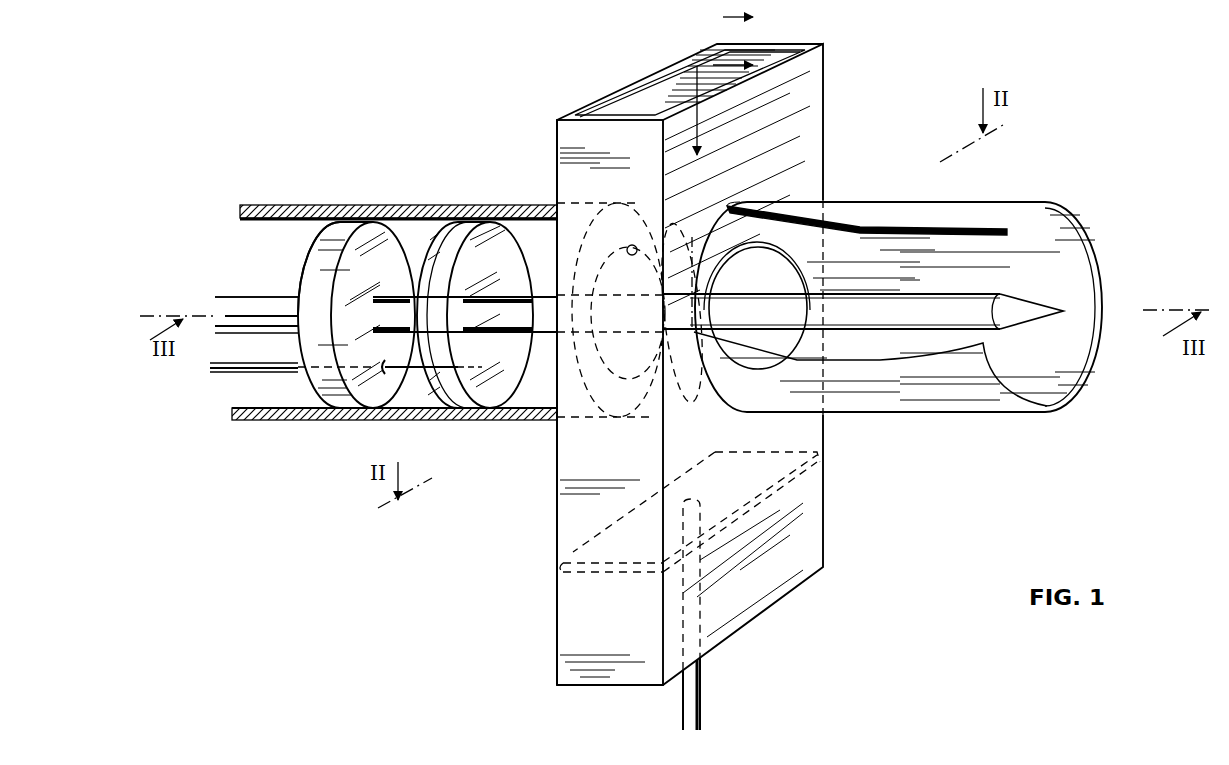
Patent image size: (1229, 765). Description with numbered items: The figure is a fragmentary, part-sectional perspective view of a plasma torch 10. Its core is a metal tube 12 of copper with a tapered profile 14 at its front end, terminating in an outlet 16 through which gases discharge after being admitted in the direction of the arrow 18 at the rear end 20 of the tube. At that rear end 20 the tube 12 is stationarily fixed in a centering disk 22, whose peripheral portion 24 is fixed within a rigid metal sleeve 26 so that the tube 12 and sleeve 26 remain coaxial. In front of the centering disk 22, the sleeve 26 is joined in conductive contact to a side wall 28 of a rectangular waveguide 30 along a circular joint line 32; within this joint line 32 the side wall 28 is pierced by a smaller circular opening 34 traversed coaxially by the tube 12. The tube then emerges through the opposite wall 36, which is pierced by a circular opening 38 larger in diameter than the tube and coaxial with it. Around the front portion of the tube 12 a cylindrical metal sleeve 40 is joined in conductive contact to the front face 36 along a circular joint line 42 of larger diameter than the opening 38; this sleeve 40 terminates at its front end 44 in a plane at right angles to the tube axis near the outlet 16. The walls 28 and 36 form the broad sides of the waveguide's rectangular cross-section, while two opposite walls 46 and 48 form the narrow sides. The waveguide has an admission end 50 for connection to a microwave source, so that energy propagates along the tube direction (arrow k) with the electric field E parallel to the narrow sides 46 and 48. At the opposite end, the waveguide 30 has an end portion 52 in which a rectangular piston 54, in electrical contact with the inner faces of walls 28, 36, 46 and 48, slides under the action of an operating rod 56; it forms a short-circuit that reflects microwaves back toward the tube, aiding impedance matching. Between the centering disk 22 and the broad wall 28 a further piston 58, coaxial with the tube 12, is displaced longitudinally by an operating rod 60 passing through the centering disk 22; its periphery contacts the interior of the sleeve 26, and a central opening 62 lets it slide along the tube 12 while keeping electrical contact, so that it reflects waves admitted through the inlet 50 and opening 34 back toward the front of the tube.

The plasma torch 10 is at (464, 600).
The metal tube 12 is at (872, 318).
The tapered profile 14 is at (1032, 305).
The outlet 16 is at (1064, 312).
The arrow 18 is at (208, 298).
The rear end 20 is at (256, 295).
The centering disk 22 is at (323, 257).
The peripheral portion 24 is at (348, 215).
The rigid metal sleeve 26 is at (287, 420).
The side wall 28 is at (557, 487).
The rectangular waveguide 30 is at (829, 542).
The circular joint line 32 is at (555, 189).
The circular opening 34 is at (643, 203).
The wall 36 is at (823, 100).
The circular opening 38 is at (797, 232).
The cylindrical metal sleeve 40 is at (946, 387).
The circular joint line 42 is at (673, 449).
The front end 44 is at (1072, 396).
The wall 46 is at (569, 135).
The wall 48 is at (795, 45).
The admission end 50 is at (668, 60).
The end portion 52 is at (577, 625).
The rectangular piston 54 is at (555, 553).
The operating rod 56 is at (700, 691).
The piston 58 is at (500, 375).
The operating rod 60 is at (240, 374).
The opening 62 is at (468, 210).